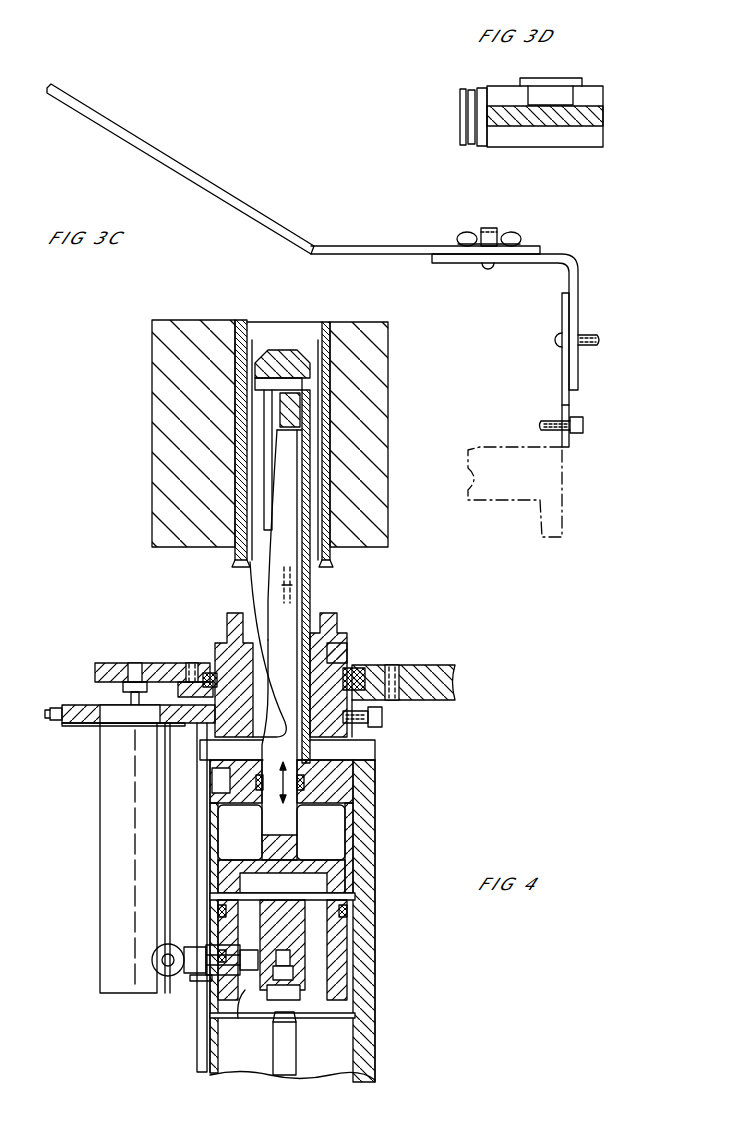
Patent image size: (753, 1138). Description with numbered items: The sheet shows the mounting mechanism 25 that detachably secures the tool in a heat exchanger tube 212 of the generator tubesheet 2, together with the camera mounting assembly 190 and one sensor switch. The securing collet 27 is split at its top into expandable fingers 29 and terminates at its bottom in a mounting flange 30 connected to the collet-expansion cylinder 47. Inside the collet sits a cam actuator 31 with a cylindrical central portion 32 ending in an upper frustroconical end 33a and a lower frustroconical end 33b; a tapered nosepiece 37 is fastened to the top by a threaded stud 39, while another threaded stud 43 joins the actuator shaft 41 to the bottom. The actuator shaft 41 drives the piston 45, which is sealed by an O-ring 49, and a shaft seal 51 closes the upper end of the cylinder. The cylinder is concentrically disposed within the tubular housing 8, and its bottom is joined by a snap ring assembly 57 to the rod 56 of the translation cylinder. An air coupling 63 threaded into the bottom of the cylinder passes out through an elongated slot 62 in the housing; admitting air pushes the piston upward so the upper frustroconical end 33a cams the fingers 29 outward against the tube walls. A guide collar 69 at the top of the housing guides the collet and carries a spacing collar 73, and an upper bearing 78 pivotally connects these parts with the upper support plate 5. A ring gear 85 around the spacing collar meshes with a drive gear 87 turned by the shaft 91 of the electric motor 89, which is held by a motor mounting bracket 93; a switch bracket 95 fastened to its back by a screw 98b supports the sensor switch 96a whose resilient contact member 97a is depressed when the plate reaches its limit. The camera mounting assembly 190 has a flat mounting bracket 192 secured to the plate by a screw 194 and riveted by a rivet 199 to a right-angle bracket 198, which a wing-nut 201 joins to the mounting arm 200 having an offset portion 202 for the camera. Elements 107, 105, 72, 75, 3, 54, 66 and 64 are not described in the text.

In FIG. 3D, the sensor switch 96a is at (606, 96).
In FIG. 3D, the resilient contact member 97a is at (455, 117).
In FIG. 3C, the offset portion 202 is at (222, 190).
In FIG. 3C, the mounting arm 200 is at (320, 246).
In FIG. 3C, the wing-nut 201 is at (518, 230).
In FIG. 3C, the right-angle bracket 198 is at (580, 262).
In FIG. 3C, the camera mounting assembly 190 is at (585, 373).
In FIG. 3C, the rivet 199 is at (598, 335).
In FIG. 3C, the flat mounting bracket 192 is at (572, 406).
In FIG. 3C, the screw 194 is at (584, 428).
In FIG. 3C, the member (phantom) 107 is at (505, 447).
In FIG. 3C, the stem (phantom) 105 is at (560, 505).
In FIG. 3C, the generator tubesheet 2 is at (150, 475).
In FIG. 3C, the heat exchanger tube 212 is at (248, 325).
In FIG. 3C, the mounting mechanism 25 is at (254, 437).
In FIG. 3C, the tapered nosepiece 37 is at (283, 350).
In FIG. 3C, the expandable fingers 29 is at (262, 405).
In FIG. 3C, the threaded stud 39 is at (290, 408).
In FIG. 3C, the upper frustroconical end 33a is at (297, 430).
In FIG. 3C, the cylindrical central portion 32 is at (297, 470).
In FIG. 3C, the cam actuator 31 is at (286, 507).
In FIG. 3C, the securing collet 27 is at (306, 560).
In FIG. 3C, the lower frustroconical end 33b is at (275, 550).
In FIG. 3C, the threaded stud 43 is at (290, 588).
In FIG. 3C, the actuator shaft 41 is at (290, 613).
In FIG. 3C, the spacing collar 73 is at (230, 612).
In FIG. 3C, the upper bearing 78 is at (212, 673).
In FIG. 3C, the block 72 is at (336, 640).
In FIG. 3C, the nut 75 is at (346, 657).
In FIG. 3C, the upper support plate 5 is at (458, 673).
In FIG. 3C, the guide collar 69 is at (335, 707).
In FIG. 3C, the direction arrow 3 is at (460, 693).
In FIG. 3C, the drive gear 87 is at (118, 663).
In FIG. 3C, the ring gear 85 is at (185, 663).
In FIG. 3C, the motor shaft 91 is at (122, 697).
In FIG. 3C, the motor mounting bracket 93 is at (80, 725).
In FIG. 3C, the switch bracket 95 is at (55, 706).
In FIG. 3C, the screw 98b is at (48, 728).
In FIG. 4, the tubular housing 8 is at (372, 858).
In FIG. 4, the mounting flange 30 is at (333, 752).
In FIG. 4, the shaft seal 51 is at (305, 784).
In FIG. 4, the collet-expansion cylinder 47 is at (220, 815).
In FIG. 4, the piston 45 is at (315, 858).
In FIG. 4, the O-ring 49 is at (350, 880).
In FIG. 4, the piston body 54 is at (350, 940).
In FIG. 4, the rod 56 is at (288, 1063).
In FIG. 4, the snap ring assembly 57 is at (238, 1020).
In FIG. 4, the electric motor 89 is at (150, 816).
In FIG. 4, the elongated slot 62 is at (200, 1052).
In FIG. 4, the fitting nut 66 is at (160, 958).
In FIG. 4, the air coupling 63 is at (188, 952).
In FIG. 4, the flange 64 is at (218, 987).